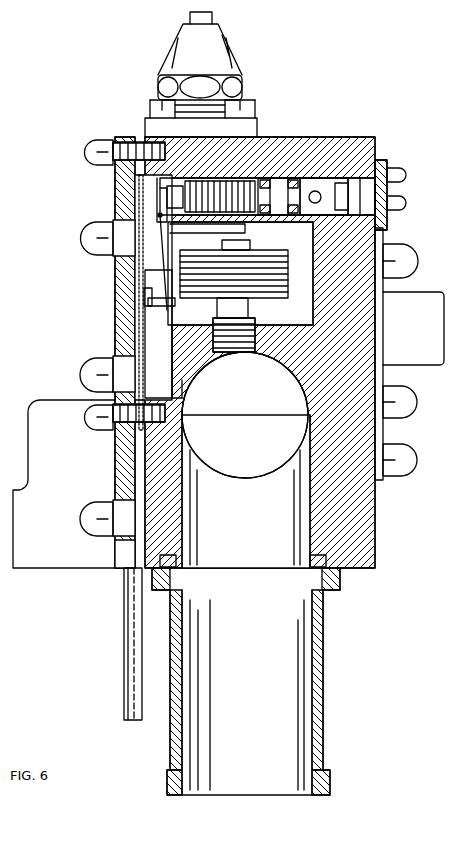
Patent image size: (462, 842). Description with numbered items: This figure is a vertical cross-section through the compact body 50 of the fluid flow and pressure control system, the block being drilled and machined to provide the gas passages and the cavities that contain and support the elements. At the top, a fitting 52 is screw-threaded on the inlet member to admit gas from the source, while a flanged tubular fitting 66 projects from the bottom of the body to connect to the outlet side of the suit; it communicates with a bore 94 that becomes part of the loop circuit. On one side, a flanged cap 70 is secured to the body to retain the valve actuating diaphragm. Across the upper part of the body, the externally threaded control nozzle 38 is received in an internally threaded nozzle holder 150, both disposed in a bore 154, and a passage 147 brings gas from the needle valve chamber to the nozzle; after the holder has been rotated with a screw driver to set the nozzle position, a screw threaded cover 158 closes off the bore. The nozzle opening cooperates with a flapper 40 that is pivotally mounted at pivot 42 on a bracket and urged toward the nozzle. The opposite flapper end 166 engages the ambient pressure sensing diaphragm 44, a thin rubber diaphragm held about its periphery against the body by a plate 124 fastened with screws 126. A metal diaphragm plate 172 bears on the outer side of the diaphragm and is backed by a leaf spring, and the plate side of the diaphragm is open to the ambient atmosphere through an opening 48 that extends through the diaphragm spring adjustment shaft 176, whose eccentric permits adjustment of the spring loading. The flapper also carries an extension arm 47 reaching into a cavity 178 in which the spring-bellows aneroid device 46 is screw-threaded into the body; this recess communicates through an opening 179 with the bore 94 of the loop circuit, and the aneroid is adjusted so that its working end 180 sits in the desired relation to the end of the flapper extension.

The control nozzle 38 is at (176, 184).
The flapper 40 is at (176, 290).
The pivot 42 is at (158, 214).
The ambient pressure sensing diaphragm 44 is at (140, 330).
The aneroid device 46 is at (272, 256).
The extension arm 47 is at (183, 230).
The opening 48 is at (133, 678).
The body 50 is at (372, 538).
The fitting 52 is at (226, 52).
The flanged tubular fitting 66 is at (323, 670).
The flanged cap 70 is at (400, 285).
The bore 94 is at (262, 468).
The plate 124 is at (114, 345).
The screws 126 is at (99, 145).
The passage 147 is at (320, 203).
The nozzle holder 150 is at (228, 183).
The bore 154 is at (262, 182).
The screw threaded cover 158 is at (388, 172).
The flapper end 166 is at (152, 302).
The metal diaphragm plate 172 is at (137, 325).
The diaphragm spring adjustment shaft 176 is at (126, 640).
The cavity 178 is at (306, 322).
The opening 179 is at (186, 386).
The working end 180 is at (240, 246).